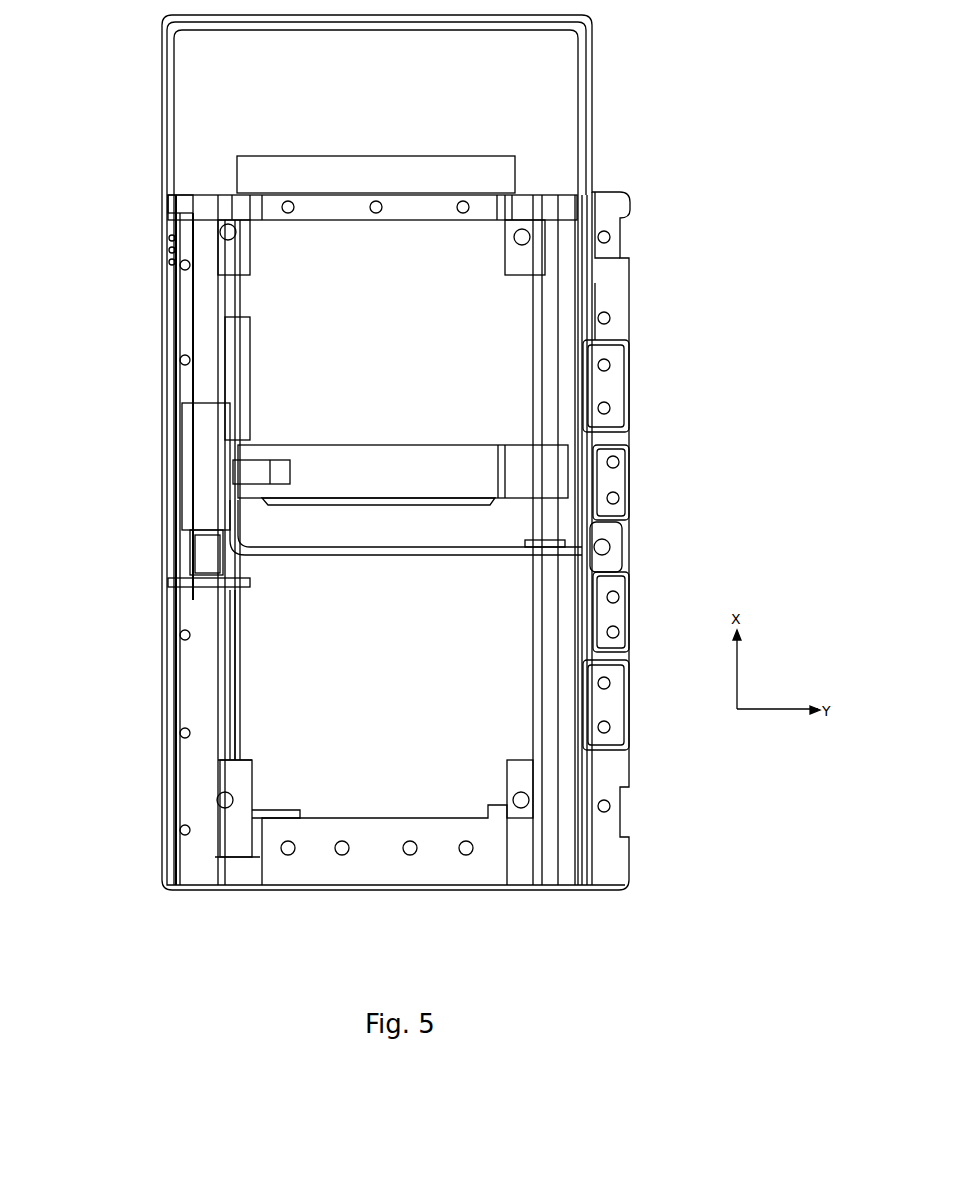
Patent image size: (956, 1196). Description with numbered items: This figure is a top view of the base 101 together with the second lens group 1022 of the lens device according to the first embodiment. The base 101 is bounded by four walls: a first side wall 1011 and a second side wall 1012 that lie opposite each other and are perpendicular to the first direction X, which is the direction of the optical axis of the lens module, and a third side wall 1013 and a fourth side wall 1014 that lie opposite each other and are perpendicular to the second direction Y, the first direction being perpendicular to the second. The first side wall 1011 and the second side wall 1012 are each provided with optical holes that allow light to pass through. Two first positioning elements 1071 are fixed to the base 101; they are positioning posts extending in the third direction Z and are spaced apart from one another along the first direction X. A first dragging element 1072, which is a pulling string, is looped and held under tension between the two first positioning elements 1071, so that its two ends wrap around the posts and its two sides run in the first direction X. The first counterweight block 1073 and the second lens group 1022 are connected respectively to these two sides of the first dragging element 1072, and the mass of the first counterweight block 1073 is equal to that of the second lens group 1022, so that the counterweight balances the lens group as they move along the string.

The base 101 is at (445, 885).
The first side wall 1011 is at (617, 220).
The third side wall 1013 is at (595, 285).
The fourth side wall 1014 is at (188, 327).
The first positioning element 1071 is at (228, 232).
The first dragging element 1072 is at (235, 705).
The first counterweight block 1073 is at (235, 385).
The second lens group 1022 is at (220, 478).
The second side wall 1012 is at (245, 880).